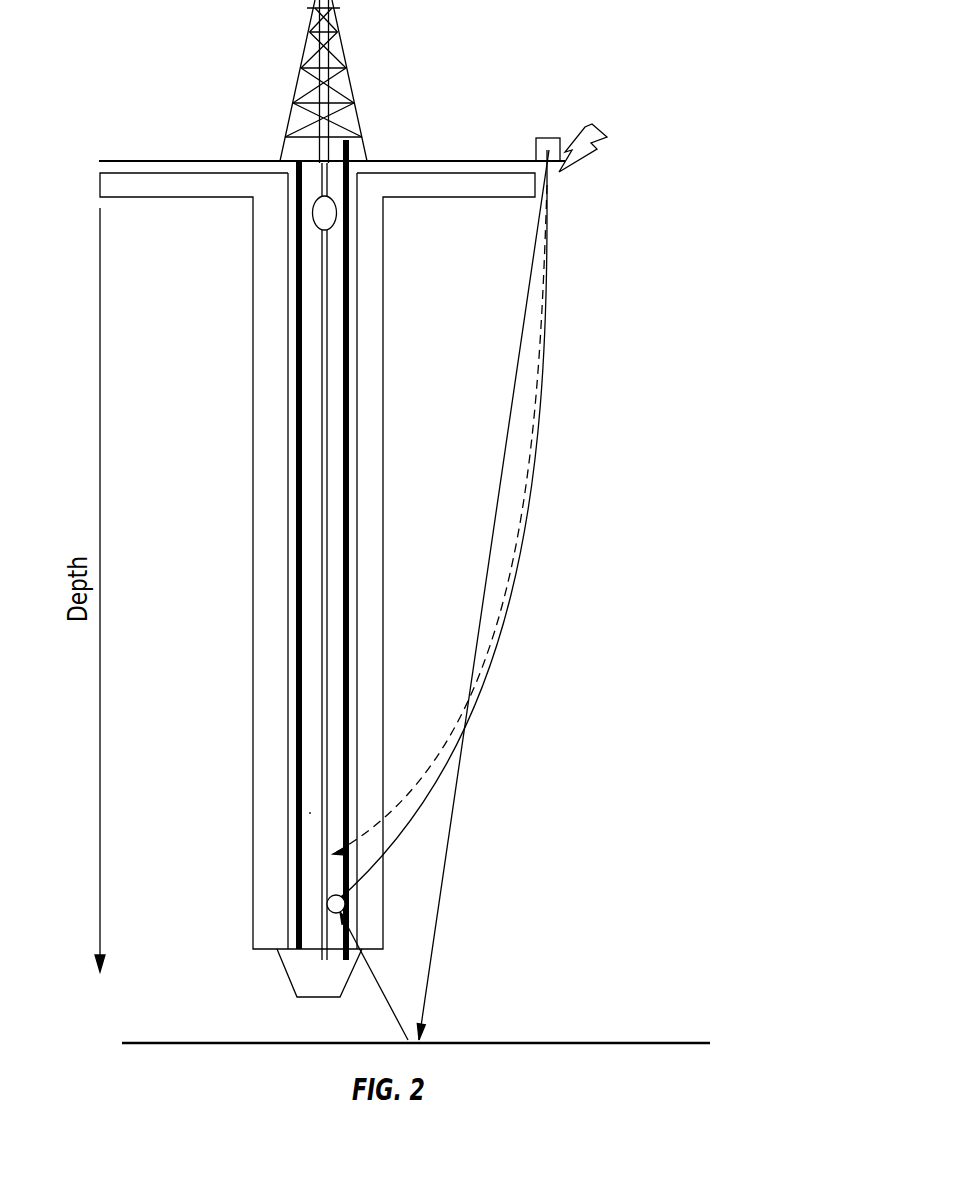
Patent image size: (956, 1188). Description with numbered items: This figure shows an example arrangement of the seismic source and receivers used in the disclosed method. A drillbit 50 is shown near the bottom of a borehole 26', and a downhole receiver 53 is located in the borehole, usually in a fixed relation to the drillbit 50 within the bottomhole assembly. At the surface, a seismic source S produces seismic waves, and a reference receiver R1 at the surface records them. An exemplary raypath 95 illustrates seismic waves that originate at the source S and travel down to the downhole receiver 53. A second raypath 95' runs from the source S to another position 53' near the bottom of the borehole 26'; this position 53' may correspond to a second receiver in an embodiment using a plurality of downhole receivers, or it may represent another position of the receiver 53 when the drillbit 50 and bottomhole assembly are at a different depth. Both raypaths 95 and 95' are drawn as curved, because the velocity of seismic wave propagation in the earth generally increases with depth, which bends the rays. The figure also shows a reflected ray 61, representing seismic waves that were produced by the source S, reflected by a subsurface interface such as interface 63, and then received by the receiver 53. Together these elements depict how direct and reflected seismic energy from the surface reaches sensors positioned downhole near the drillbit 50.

The reference receiver R1 is at (546, 138).
The surface seismic source S is at (600, 127).
The borehole 26' is at (233, 555).
The position near the bottom of the borehole 53' is at (250, 843).
The drillbit 50 is at (283, 972).
The downhole receiver 53 is at (411, 932).
The reflected ray 61 is at (430, 975).
The interface 63 is at (563, 1041).
The raypath 95 is at (441, 526).
The raypath 95' is at (440, 520).